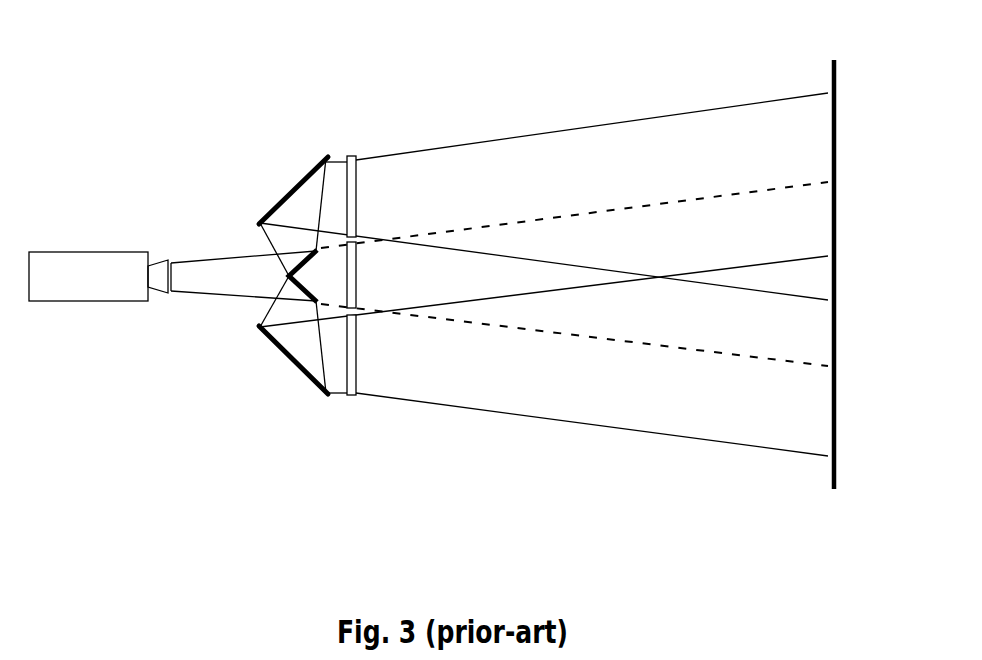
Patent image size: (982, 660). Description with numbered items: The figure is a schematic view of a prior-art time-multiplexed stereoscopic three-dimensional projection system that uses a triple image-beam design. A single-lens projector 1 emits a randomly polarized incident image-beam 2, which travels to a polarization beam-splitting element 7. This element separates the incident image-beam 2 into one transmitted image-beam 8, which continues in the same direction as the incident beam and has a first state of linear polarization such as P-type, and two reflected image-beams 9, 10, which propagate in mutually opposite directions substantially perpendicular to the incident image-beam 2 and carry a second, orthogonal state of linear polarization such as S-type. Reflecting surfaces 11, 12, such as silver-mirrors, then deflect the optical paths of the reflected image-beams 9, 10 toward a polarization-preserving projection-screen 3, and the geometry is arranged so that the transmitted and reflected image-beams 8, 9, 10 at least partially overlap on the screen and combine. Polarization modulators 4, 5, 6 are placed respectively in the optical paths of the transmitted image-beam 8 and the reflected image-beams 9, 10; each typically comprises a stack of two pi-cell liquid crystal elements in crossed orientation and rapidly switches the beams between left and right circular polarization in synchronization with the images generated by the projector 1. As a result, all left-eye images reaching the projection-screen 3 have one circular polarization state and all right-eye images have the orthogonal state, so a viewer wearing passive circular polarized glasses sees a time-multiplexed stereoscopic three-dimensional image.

The single-lens projector 1 is at (99, 245).
The incident image-beam 2 is at (210, 255).
The polarization-preserving projection-screen 3 is at (843, 72).
The polarization modulator 4 is at (363, 277).
The polarization modulator 5 is at (362, 150).
The polarization modulator 6 is at (361, 402).
The polarization beam-splitting element 7 is at (283, 277).
The transmitted image-beam 8 is at (573, 209).
The reflected image-beam 9 is at (667, 110).
The reflected image-beam 10 is at (668, 442).
The reflecting surface 11 is at (301, 173).
The reflecting surface 12 is at (303, 383).